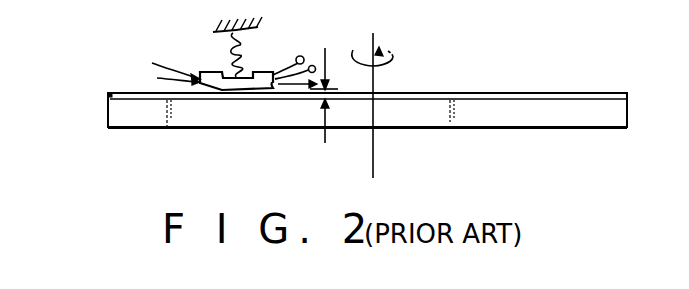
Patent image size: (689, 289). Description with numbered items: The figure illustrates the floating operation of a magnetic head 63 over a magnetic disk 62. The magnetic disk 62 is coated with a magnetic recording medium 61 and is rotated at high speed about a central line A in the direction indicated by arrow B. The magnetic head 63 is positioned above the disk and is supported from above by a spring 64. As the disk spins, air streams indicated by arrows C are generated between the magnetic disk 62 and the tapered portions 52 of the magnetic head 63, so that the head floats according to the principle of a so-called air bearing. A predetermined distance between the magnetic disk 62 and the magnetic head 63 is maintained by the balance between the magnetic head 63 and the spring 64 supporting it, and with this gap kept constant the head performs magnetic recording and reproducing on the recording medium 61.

The tapered portions 52 is at (204, 90).
The magnetic recording medium 61 is at (107, 96).
The magnetic disk 62 is at (132, 121).
The magnetic head 63 is at (203, 68).
The spring 64 is at (253, 51).
The central line A is at (377, 88).
The arrow B is at (382, 53).
The arrows C is at (160, 70).